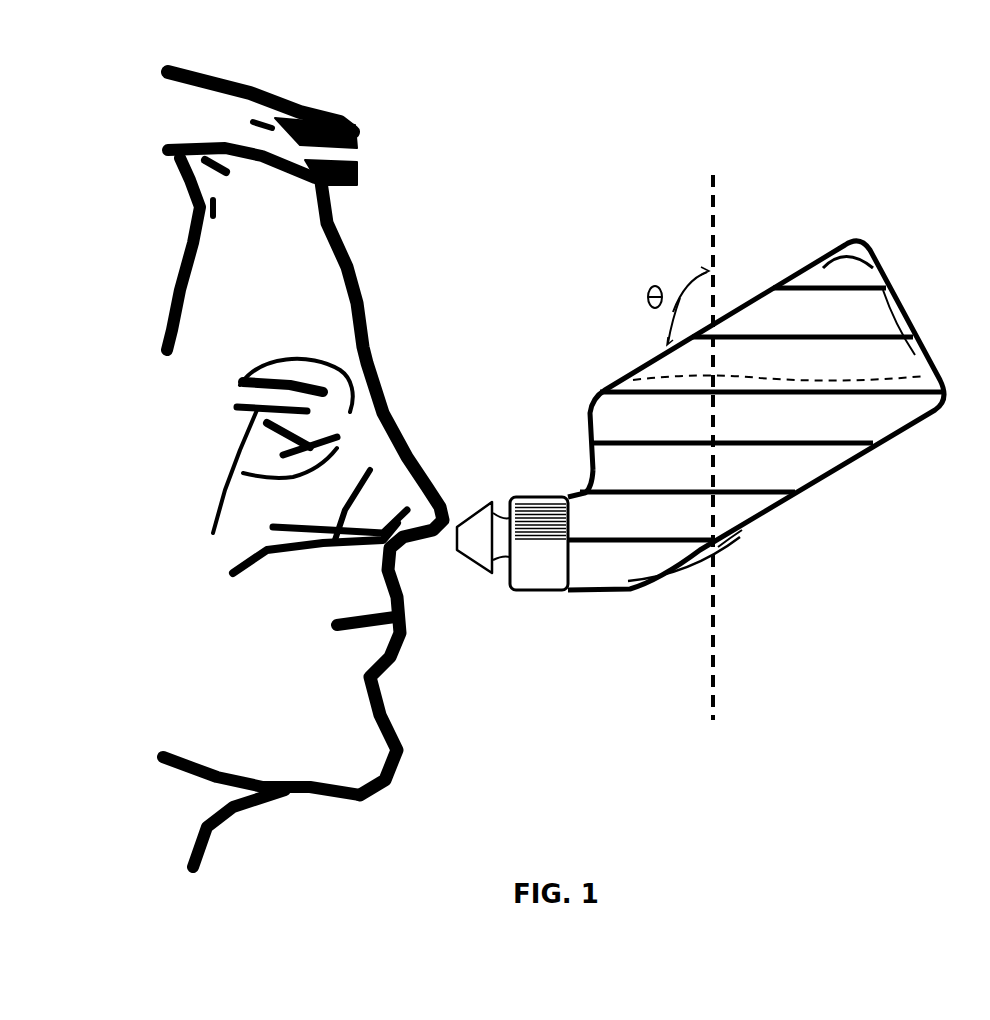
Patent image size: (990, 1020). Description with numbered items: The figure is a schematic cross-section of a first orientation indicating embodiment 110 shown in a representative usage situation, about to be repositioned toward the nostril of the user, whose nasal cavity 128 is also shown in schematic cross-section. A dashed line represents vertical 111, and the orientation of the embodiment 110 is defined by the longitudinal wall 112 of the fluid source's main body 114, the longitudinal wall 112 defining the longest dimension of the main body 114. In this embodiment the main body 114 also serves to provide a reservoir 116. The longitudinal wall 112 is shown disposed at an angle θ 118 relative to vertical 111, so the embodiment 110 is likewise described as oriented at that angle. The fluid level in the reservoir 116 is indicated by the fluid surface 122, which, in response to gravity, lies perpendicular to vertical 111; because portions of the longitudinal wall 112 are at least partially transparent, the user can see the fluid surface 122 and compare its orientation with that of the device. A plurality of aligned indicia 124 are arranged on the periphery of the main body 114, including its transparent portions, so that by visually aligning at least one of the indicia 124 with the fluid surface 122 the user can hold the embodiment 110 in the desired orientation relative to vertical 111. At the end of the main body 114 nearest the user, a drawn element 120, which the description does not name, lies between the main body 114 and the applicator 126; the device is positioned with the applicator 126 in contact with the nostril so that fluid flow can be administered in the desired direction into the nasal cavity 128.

The first orientation indicating embodiment 110 is at (789, 184).
The vertical 111 is at (720, 659).
The longitudinal wall 112 is at (866, 470).
The main body 114 is at (596, 422).
The reservoir 116 is at (846, 322).
The angle θ 118 is at (655, 285).
The cap 120 is at (549, 600).
The fluid surface 122 is at (917, 375).
The aligned indicia 124 is at (773, 497).
The applicator 126 is at (473, 567).
The nasal cavity 128 is at (356, 426).